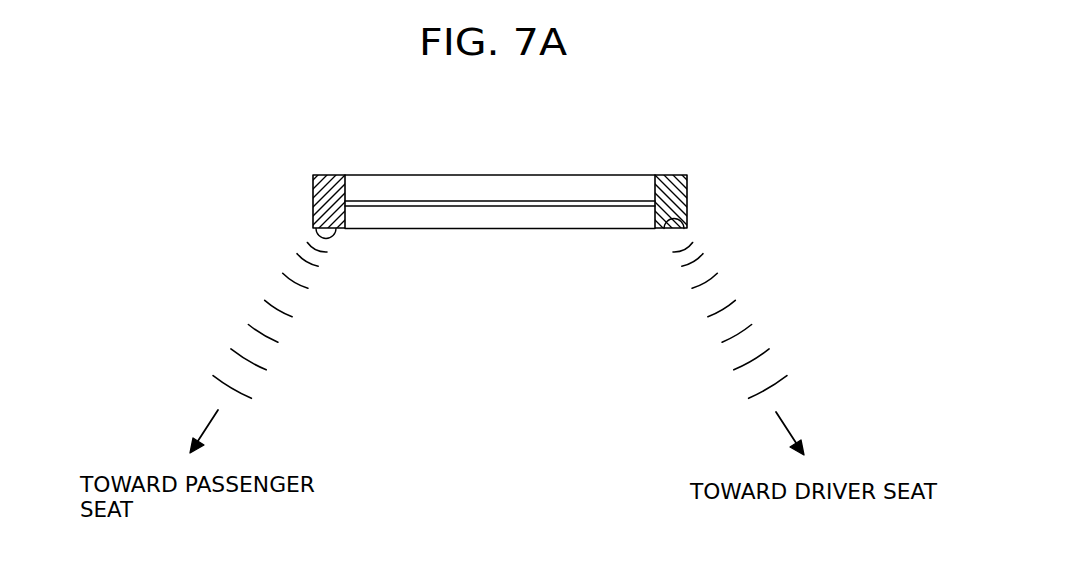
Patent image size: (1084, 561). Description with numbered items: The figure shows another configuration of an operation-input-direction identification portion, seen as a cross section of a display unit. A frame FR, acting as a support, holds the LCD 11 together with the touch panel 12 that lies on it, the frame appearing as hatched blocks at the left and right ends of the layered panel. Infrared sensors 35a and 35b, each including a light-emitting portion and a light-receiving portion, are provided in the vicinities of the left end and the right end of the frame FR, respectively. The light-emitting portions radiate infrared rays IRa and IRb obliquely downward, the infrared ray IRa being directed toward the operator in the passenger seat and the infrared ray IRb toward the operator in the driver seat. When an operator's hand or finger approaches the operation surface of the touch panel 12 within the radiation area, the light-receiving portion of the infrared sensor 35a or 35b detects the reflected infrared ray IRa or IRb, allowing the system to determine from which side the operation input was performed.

The LCD 11 is at (552, 188).
The touch panel 12 is at (513, 218).
The infrared sensor 35a is at (340, 237).
The infrared sensor 35b is at (662, 236).
The frame FR is at (313, 201).
The infrared ray IRa is at (280, 317).
The infrared ray IRb is at (720, 310).